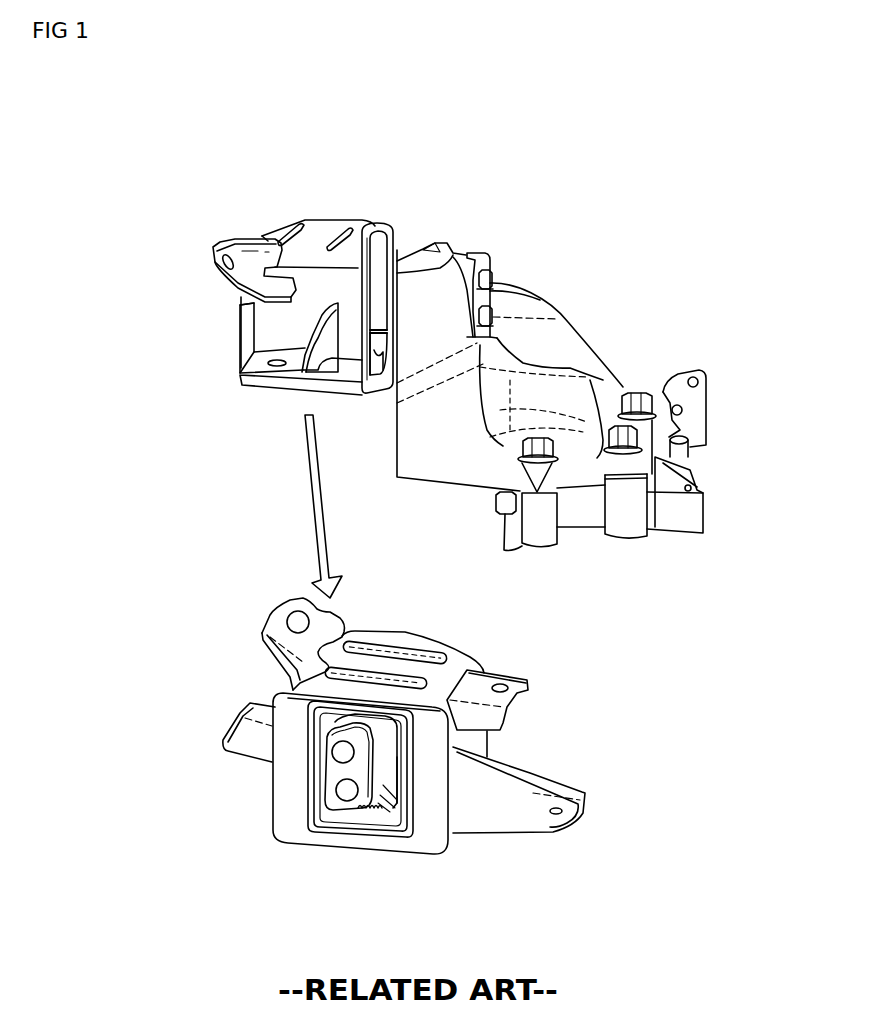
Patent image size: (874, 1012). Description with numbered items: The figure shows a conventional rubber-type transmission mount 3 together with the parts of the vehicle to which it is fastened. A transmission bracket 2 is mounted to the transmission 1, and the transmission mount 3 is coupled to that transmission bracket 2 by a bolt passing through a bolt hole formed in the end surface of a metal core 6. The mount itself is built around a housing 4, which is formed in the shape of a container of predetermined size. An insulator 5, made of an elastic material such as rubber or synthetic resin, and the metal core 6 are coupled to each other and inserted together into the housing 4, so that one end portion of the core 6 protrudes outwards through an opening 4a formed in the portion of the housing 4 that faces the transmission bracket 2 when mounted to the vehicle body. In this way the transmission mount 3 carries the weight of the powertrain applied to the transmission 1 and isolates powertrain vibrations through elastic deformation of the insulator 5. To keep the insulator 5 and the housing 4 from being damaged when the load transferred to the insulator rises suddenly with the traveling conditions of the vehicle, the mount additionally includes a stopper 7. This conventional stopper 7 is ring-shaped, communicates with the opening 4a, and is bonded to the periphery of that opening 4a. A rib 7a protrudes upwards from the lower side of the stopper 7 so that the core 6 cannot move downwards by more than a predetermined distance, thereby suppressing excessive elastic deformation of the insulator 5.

The transmission 1 is at (647, 512).
The transmission bracket 2 is at (497, 300).
The transmission mount 3 is at (180, 211).
The housing 4 is at (448, 652).
The opening 4a is at (393, 757).
The insulator 5 is at (385, 730).
The metal core 6 is at (337, 773).
The stopper 7 is at (312, 770).
The rib 7a is at (380, 812).